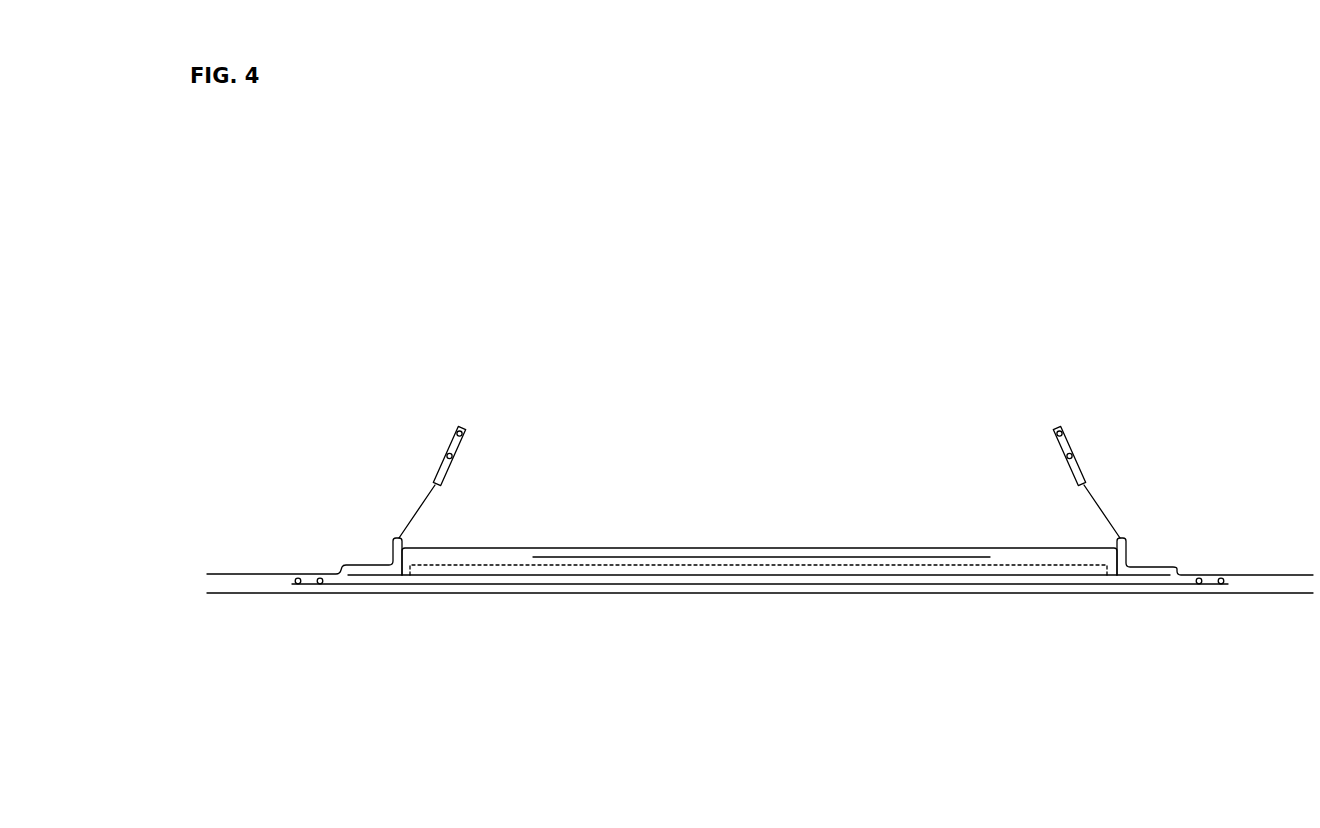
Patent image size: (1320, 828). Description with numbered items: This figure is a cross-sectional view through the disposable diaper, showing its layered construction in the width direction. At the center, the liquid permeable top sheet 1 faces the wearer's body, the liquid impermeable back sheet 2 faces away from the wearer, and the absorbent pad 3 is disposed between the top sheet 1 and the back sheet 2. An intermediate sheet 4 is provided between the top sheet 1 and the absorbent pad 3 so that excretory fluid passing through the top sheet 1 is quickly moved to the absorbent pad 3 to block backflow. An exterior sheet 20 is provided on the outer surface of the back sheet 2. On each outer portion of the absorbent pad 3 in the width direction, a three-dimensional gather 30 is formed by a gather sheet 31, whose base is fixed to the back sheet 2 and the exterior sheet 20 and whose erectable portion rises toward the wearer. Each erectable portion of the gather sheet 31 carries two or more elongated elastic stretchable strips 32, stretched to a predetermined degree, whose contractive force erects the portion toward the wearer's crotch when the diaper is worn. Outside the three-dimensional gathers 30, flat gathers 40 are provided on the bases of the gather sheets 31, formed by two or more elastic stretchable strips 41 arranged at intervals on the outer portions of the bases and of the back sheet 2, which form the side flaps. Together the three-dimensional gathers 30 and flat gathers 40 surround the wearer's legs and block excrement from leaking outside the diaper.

The top sheet 1 is at (737, 547).
The back sheet 2 is at (668, 586).
The exterior sheet 20 is at (813, 594).
The absorbent pad 3 is at (655, 573).
The intermediate sheet 4 is at (803, 557).
The three-dimensional gathers 30 is at (772, 446).
The gather sheets 31 is at (425, 498).
The elastic stretchable strips 32 is at (462, 427).
The flat gathers 40 is at (271, 556).
The elastic stretchable strips 41 is at (320, 593).